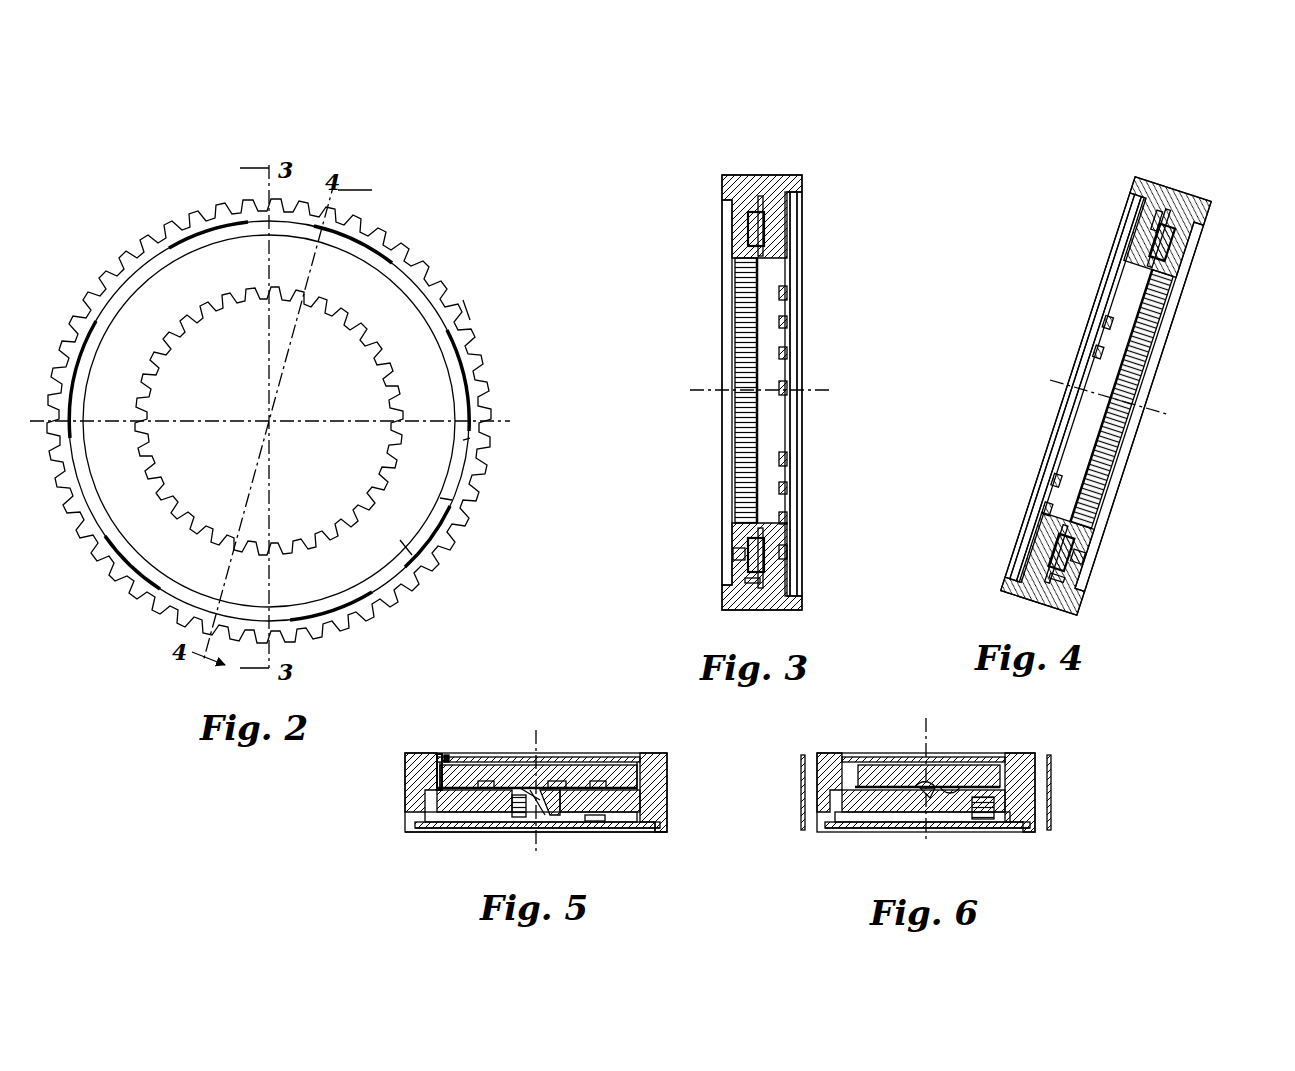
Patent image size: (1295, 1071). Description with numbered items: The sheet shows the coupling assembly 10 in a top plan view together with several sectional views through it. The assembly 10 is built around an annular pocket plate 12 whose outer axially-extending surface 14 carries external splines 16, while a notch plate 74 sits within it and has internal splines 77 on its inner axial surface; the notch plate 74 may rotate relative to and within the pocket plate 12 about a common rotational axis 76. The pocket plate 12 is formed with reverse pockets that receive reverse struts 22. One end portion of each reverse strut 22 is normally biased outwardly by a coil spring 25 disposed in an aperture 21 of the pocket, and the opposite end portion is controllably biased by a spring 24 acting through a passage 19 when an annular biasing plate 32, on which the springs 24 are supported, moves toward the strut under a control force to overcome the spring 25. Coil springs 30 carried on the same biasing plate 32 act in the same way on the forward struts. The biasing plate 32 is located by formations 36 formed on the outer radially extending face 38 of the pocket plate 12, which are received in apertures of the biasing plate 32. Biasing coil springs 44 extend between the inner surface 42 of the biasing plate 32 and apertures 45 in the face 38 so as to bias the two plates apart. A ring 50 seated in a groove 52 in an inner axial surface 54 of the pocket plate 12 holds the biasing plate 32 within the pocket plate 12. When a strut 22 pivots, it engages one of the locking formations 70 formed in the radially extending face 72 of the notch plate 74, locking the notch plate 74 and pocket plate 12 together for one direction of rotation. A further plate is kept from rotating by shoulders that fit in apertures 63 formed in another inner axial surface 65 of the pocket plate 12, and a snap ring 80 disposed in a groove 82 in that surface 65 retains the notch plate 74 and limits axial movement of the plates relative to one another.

In FIG. 2, the assembly 10 is at (362, 148).
In FIG. 2, the pocket plate 12 is at (488, 495).
In FIG. 3, the pocket plate 12 is at (722, 600).
In FIG. 4, the pocket plate 12 is at (1062, 598).
In FIG. 5, the pocket plate 12 is at (404, 812).
In FIG. 6, the pocket plate 12 is at (828, 752).
In FIG. 2, the outer axially-extending surface 14 is at (470, 315).
In FIG. 2, the external splines 16 is at (490, 368).
In FIG. 5, the passage 19 is at (533, 790).
In FIG. 5, the aperture 21 is at (518, 815).
In FIG. 5, the reverse strut 22 is at (540, 785).
In FIG. 3, the spring 24 is at (789, 352).
In FIG. 4, the spring 24 is at (1130, 265).
In FIG. 5, the spring 24 is at (515, 815).
In FIG. 5, the coil spring 25 is at (550, 812).
In FIG. 3, the coil spring 30 is at (789, 322).
In FIG. 4, the coil spring 30 is at (1095, 345).
In FIG. 3, the annular biasing plate 32 is at (796, 272).
In FIG. 4, the annular biasing plate 32 is at (1100, 308).
In FIG. 5, the annular biasing plate 32 is at (460, 830).
In FIG. 6, the annular biasing plate 32 is at (905, 829).
In FIG. 3, the formation 36 is at (789, 300).
In FIG. 5, the formation 36 is at (530, 818).
In FIG. 5, the outer radially extending face 38 is at (645, 805).
In FIG. 6, the outer radially extending face 38 is at (950, 790).
In FIG. 5, the inner surface 42 is at (450, 820).
In FIG. 6, the inner surface 42 is at (880, 820).
In FIG. 3, the biasing coil spring 44 is at (792, 240).
In FIG. 4, the biasing coil spring 44 is at (1150, 200).
In FIG. 5, the biasing coil spring 44 is at (595, 820).
In FIG. 6, the biasing coil spring 44 is at (1000, 825).
In FIG. 4, the aperture 45 is at (1170, 230).
In FIG. 6, the aperture 45 is at (995, 805).
In FIG. 3, the ring 50 is at (800, 200).
In FIG. 4, the ring 50 is at (1012, 570).
In FIG. 5, the ring 50 is at (435, 830).
In FIG. 6, the ring 50 is at (995, 830).
In FIG. 3, the groove 52 is at (800, 595).
In FIG. 4, the groove 52 is at (1135, 190).
In FIG. 5, the groove 52 is at (655, 826).
In FIG. 6, the groove 52 is at (820, 826).
In FIG. 3, the inner axial surface 54 is at (775, 200).
In FIG. 4, the inner axial surface 54 is at (1030, 565).
In FIG. 5, the inner axial surface 54 is at (660, 812).
In FIG. 6, the inner axial surface 54 is at (842, 810).
In FIG. 2, the aperture 63 is at (195, 230).
In FIG. 5, the inner axial surface 65 is at (445, 762).
In FIG. 6, the inner axial surface 65 is at (1000, 782).
In FIG. 3, the locking formation 70 is at (752, 228).
In FIG. 4, the locking formation 70 is at (1160, 230).
In FIG. 5, the locking formation 70 is at (488, 781).
In FIG. 6, the locking formation 70 is at (920, 782).
In FIG. 3, the radially extending face 72 is at (758, 548).
In FIG. 4, the radially extending face 72 is at (1165, 260).
In FIG. 5, the radially extending face 72 is at (490, 782).
In FIG. 6, the radially extending face 72 is at (955, 787).
In FIG. 2, the notch plate 74 is at (405, 548).
In FIG. 3, the notch plate 74 is at (724, 252).
In FIG. 4, the notch plate 74 is at (1198, 240).
In FIG. 5, the notch plate 74 is at (585, 760).
In FIG. 6, the notch plate 74 is at (860, 775).
In FIG. 2, the common rotational axis 76 is at (271, 423).
In FIG. 3, the common rotational axis 76 is at (712, 390).
In FIG. 4, the common rotational axis 76 is at (1165, 390).
In FIG. 5, the common rotational axis 76 is at (537, 738).
In FIG. 6, the common rotational axis 76 is at (926, 728).
In FIG. 2, the internal splines 77 is at (165, 372).
In FIG. 3, the internal splines 77 is at (740, 340).
In FIG. 4, the internal splines 77 is at (1100, 498).
In FIG. 2, the snap ring 80 is at (110, 263).
In FIG. 3, the snap ring 80 is at (735, 555).
In FIG. 4, the snap ring 80 is at (1208, 215).
In FIG. 5, the snap ring 80 is at (448, 758).
In FIG. 6, the snap ring 80 is at (1000, 760).
In FIG. 3, the groove 82 is at (752, 580).
In FIG. 4, the groove 82 is at (1085, 585).
In FIG. 5, the groove 82 is at (438, 758).